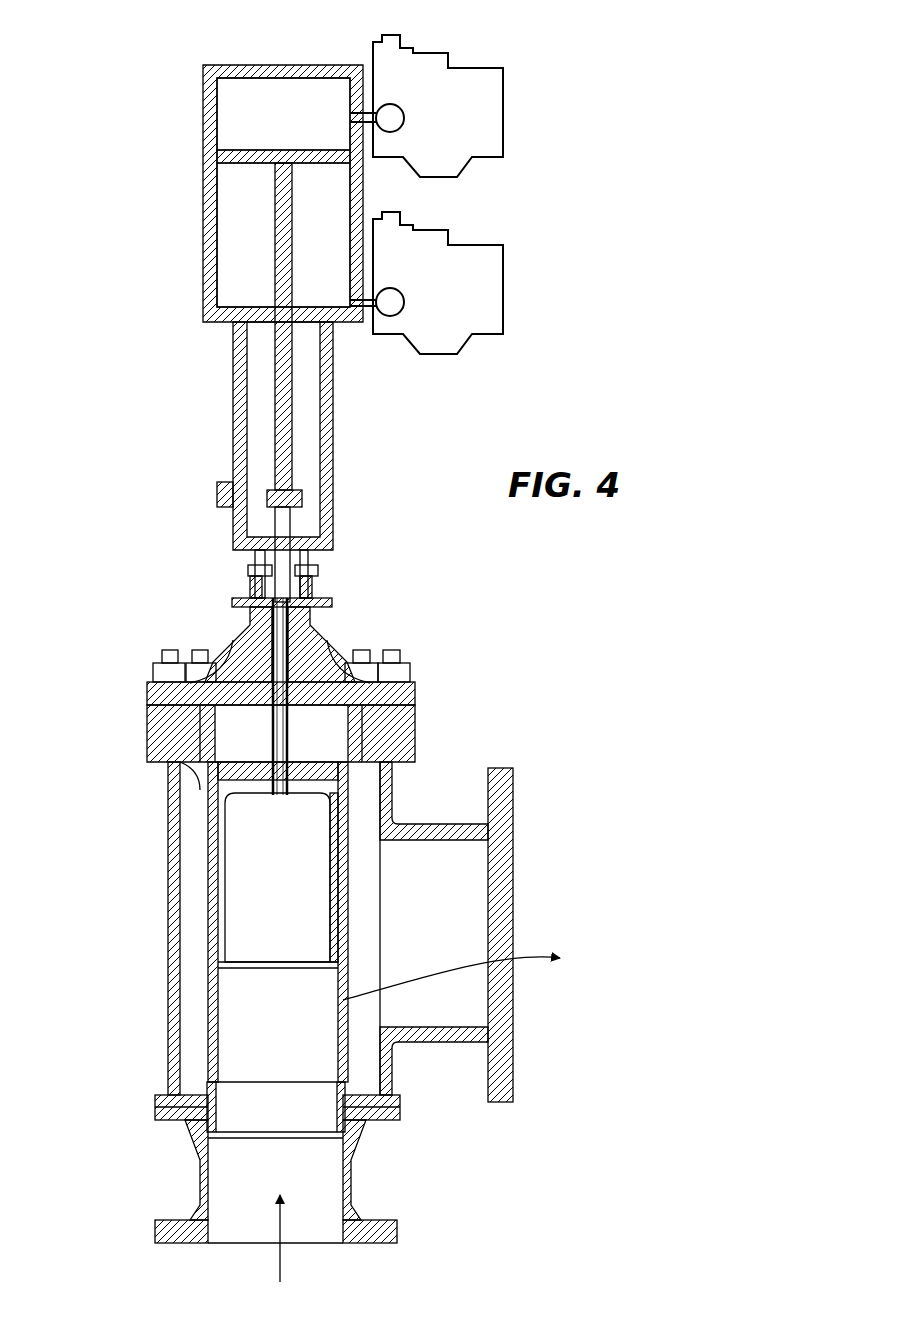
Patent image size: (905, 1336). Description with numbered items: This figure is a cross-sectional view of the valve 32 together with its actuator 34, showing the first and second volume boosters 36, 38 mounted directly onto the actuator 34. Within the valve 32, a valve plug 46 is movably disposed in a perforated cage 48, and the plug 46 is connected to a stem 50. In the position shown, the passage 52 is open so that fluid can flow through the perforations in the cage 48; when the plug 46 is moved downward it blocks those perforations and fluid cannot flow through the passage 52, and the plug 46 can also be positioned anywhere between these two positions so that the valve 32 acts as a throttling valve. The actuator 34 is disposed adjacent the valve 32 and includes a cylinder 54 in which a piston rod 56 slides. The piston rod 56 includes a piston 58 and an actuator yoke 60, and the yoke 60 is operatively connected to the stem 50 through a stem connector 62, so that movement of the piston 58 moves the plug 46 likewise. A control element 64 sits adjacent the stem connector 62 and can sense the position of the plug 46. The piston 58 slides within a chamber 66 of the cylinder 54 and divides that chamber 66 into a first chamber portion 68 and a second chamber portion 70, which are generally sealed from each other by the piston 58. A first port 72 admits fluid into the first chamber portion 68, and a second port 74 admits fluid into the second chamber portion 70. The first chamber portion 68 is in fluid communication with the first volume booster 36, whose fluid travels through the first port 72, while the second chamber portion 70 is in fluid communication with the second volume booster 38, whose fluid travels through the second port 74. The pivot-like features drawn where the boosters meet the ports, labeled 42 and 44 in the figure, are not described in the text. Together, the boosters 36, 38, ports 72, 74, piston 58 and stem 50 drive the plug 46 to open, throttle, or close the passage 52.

The valve 32 is at (145, 735).
The actuator 34 is at (318, 60).
The first volume booster 36 is at (488, 68).
The second volume booster 38 is at (490, 245).
The first link pivot 42 is at (404, 126).
The second link pivot 44 is at (404, 312).
The valve plug 46 is at (225, 903).
The cage 48 is at (208, 1000).
The stem 50 is at (270, 745).
The passage 52 is at (490, 957).
The cylinder 54 is at (172, 310).
The piston rod 56 is at (272, 355).
The piston 58 is at (242, 163).
The actuator yoke 60 is at (275, 412).
The stem connector 62 is at (303, 498).
The control element 64 is at (217, 494).
The chamber 66 is at (176, 76).
The first chamber portion 68 is at (262, 100).
The second chamber portion 70 is at (228, 265).
The first port 72 is at (364, 124).
The second port 74 is at (364, 308).